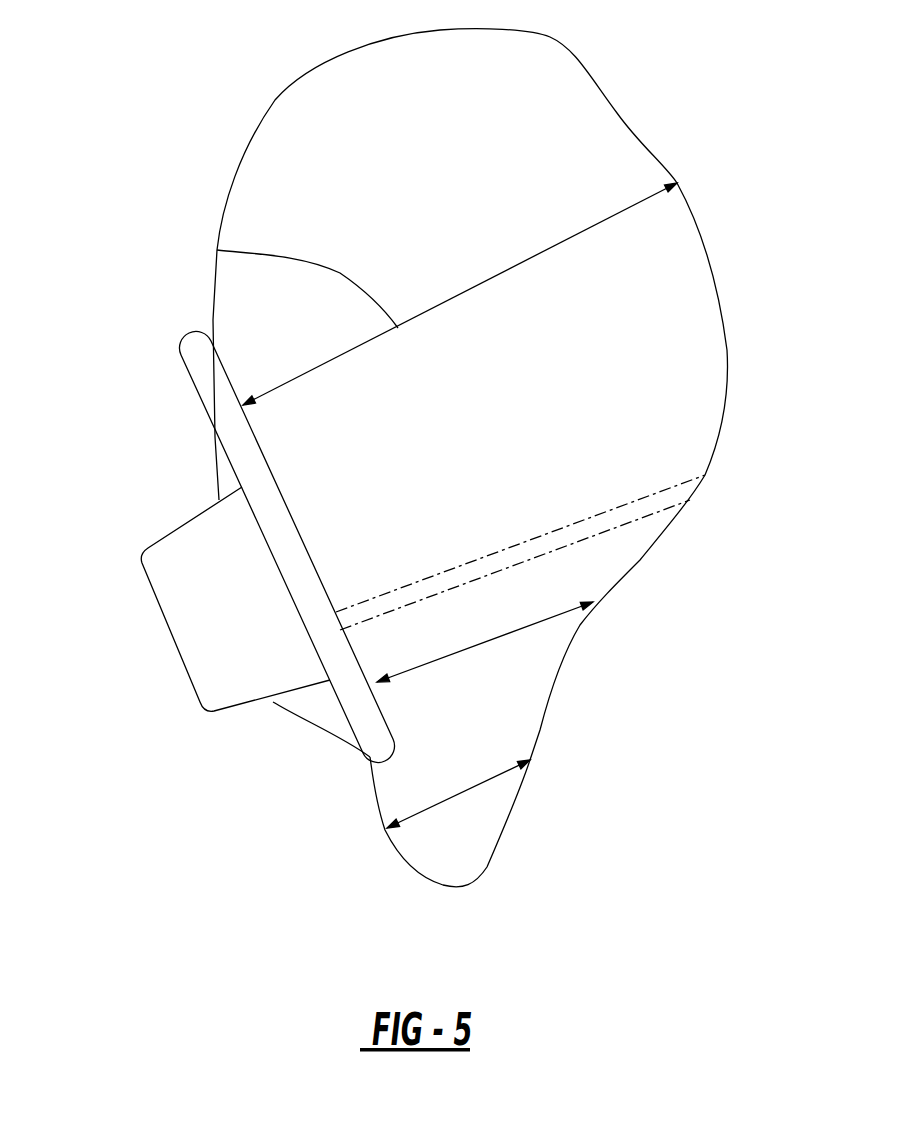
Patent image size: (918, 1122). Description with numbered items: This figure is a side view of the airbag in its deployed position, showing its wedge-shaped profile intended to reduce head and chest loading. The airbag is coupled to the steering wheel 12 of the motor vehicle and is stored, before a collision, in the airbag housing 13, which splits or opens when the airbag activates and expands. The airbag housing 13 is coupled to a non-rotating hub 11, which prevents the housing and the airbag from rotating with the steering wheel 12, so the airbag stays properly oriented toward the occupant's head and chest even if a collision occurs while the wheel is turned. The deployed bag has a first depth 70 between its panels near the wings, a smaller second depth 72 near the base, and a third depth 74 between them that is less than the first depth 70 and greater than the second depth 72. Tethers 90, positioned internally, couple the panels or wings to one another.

The non-rotating hub 11 is at (208, 713).
The steering wheel 12 is at (202, 372).
The airbag housing 13 is at (205, 548).
The first depth 70 is at (217, 250).
The second depth 72 is at (437, 807).
The third depth 74 is at (512, 633).
The tethers 90 is at (600, 533).